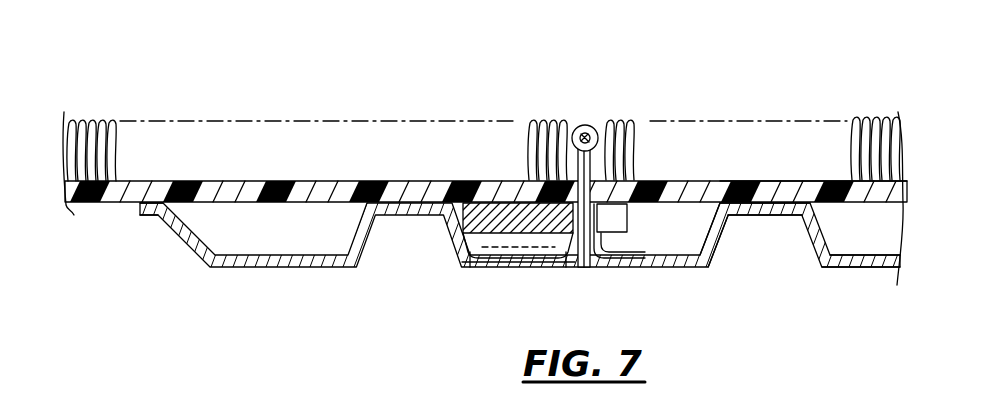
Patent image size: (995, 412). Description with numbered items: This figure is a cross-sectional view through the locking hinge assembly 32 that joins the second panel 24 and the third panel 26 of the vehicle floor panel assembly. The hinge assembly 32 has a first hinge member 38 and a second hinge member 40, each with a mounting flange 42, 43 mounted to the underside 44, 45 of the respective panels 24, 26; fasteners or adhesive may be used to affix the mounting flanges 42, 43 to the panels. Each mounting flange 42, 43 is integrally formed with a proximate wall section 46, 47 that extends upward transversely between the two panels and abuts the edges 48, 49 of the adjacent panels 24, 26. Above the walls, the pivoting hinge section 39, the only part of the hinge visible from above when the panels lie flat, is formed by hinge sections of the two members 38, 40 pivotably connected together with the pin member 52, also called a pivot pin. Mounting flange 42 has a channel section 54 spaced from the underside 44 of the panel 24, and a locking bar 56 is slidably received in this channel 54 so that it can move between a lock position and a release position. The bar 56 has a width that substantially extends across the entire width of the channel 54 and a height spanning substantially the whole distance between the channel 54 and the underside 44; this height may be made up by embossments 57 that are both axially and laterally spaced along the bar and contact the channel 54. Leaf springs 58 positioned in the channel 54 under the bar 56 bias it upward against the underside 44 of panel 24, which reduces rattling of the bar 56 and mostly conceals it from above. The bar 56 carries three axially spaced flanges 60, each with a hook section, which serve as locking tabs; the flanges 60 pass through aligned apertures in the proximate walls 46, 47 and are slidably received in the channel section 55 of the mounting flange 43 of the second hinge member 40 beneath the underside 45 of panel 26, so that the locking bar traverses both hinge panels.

The second panel 24 is at (137, 184).
The third panel 26 is at (787, 180).
The locking hinge assembly 32 is at (478, 282).
The first hinge member 38 is at (342, 268).
The hinge section 39 is at (592, 128).
The second hinge member 40 is at (835, 267).
The mounting flange 42 is at (163, 216).
The mounting flange 43 is at (774, 216).
The underside 44 is at (70, 206).
The underside 45 is at (866, 267).
The proximate wall section 46 is at (578, 170).
The proximate wall section 47 is at (596, 178).
The edge 48 is at (590, 268).
The edge 49 is at (614, 230).
The pin member 52 is at (583, 125).
The channel section 54 is at (462, 260).
The channel section 55 is at (702, 266).
The locking bar 56 is at (465, 225).
The embossments 57 is at (468, 268).
The leaf springs 58 is at (510, 268).
The flanges 60 is at (628, 266).